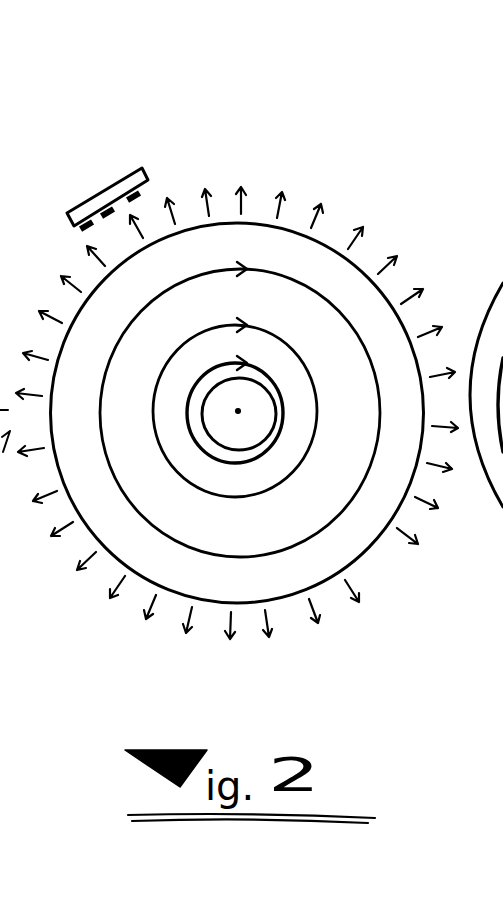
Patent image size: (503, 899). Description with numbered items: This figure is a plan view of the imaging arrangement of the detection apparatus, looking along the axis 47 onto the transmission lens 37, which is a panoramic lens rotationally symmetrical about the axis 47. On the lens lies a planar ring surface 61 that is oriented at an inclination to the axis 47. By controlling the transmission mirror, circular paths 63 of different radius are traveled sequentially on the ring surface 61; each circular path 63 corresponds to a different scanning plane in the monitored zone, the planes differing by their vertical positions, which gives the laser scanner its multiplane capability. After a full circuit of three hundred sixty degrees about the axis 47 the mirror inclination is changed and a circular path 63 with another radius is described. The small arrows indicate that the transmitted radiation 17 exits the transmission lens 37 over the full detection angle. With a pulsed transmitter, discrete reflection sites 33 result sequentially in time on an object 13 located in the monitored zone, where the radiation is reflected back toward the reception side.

The object 13 is at (120, 188).
The transmitted radiation 17 is at (270, 222).
The reflection sites 33 is at (145, 193).
The transmission lens 37 is at (302, 648).
The axis 47 is at (238, 412).
The ring surface 61 is at (330, 503).
The circular path 63 is at (303, 283).